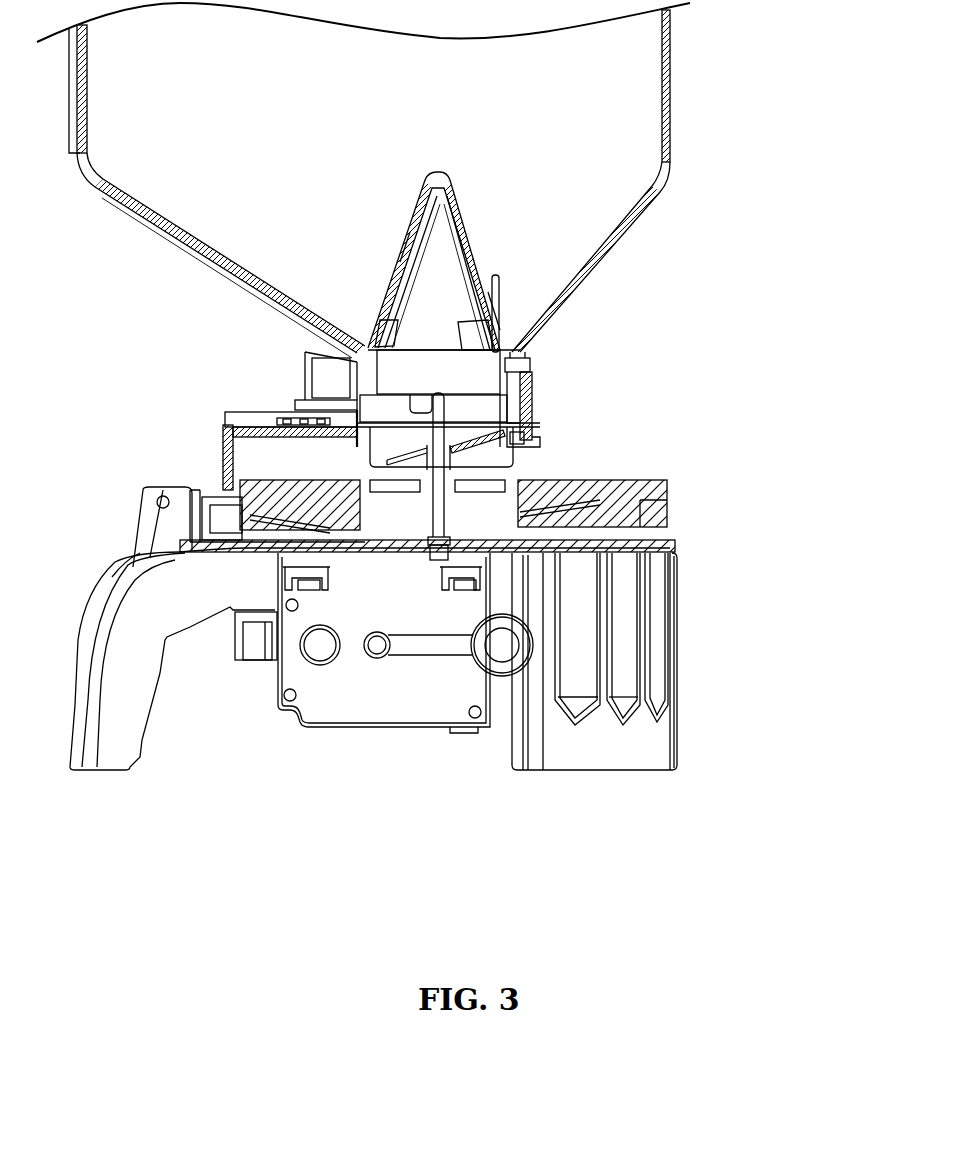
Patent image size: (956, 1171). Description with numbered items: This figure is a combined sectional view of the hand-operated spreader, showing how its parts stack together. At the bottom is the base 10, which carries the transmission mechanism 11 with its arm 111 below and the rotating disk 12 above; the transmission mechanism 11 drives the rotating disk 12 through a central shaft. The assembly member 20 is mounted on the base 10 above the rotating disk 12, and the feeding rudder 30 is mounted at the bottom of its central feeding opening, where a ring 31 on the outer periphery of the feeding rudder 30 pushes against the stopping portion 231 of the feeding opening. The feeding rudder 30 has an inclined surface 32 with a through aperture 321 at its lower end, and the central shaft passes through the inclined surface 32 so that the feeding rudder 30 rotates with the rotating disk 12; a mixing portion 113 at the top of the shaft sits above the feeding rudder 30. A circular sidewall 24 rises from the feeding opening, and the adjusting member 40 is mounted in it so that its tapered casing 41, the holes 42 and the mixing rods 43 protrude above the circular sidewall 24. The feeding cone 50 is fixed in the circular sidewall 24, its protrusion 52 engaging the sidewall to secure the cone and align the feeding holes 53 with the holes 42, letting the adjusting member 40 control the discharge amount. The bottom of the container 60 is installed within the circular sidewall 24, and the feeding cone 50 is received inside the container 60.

The base 10 is at (719, 614).
The transmission mechanism 11 is at (340, 712).
The arm 111 is at (498, 648).
The mixing portion 113 is at (415, 398).
The rotating disk 12 is at (650, 478).
The assembly member 20 is at (199, 442).
The stopping portion 231 is at (530, 448).
The circular sidewall 24 is at (532, 392).
The feeding rudder 30 is at (336, 458).
The ring 31 is at (535, 433).
The inclined surface 32 is at (515, 424).
The through aperture 321 is at (345, 420).
The adjusting member 40 is at (492, 244).
The tapered casing 41 is at (405, 250).
The holes 42 is at (385, 330).
The mixing rod 43 is at (493, 300).
The feeding cone 50 is at (493, 202).
The protrusion 52 is at (530, 366).
The feeding holes 53 is at (495, 285).
The container 60 is at (686, 177).